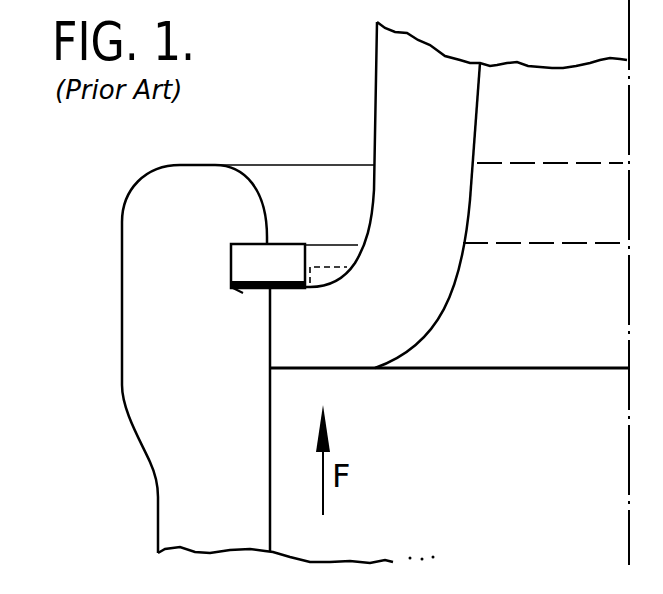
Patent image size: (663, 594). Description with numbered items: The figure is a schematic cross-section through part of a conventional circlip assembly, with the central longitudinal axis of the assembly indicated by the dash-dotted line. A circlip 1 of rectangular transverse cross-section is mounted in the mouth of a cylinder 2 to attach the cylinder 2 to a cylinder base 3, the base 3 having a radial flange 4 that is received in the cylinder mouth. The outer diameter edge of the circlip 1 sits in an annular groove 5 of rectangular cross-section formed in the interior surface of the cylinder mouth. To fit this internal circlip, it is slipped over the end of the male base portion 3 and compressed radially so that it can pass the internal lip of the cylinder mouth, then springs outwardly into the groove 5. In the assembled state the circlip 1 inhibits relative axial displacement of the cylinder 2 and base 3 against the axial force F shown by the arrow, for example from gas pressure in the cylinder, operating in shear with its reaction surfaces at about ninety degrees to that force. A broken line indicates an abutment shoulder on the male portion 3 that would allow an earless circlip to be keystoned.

The circlip 1 is at (288, 262).
The cylinder 2 is at (165, 218).
The cylinder base 3 is at (408, 102).
The radial flange 4 is at (348, 338).
The annular groove 5 is at (243, 293).